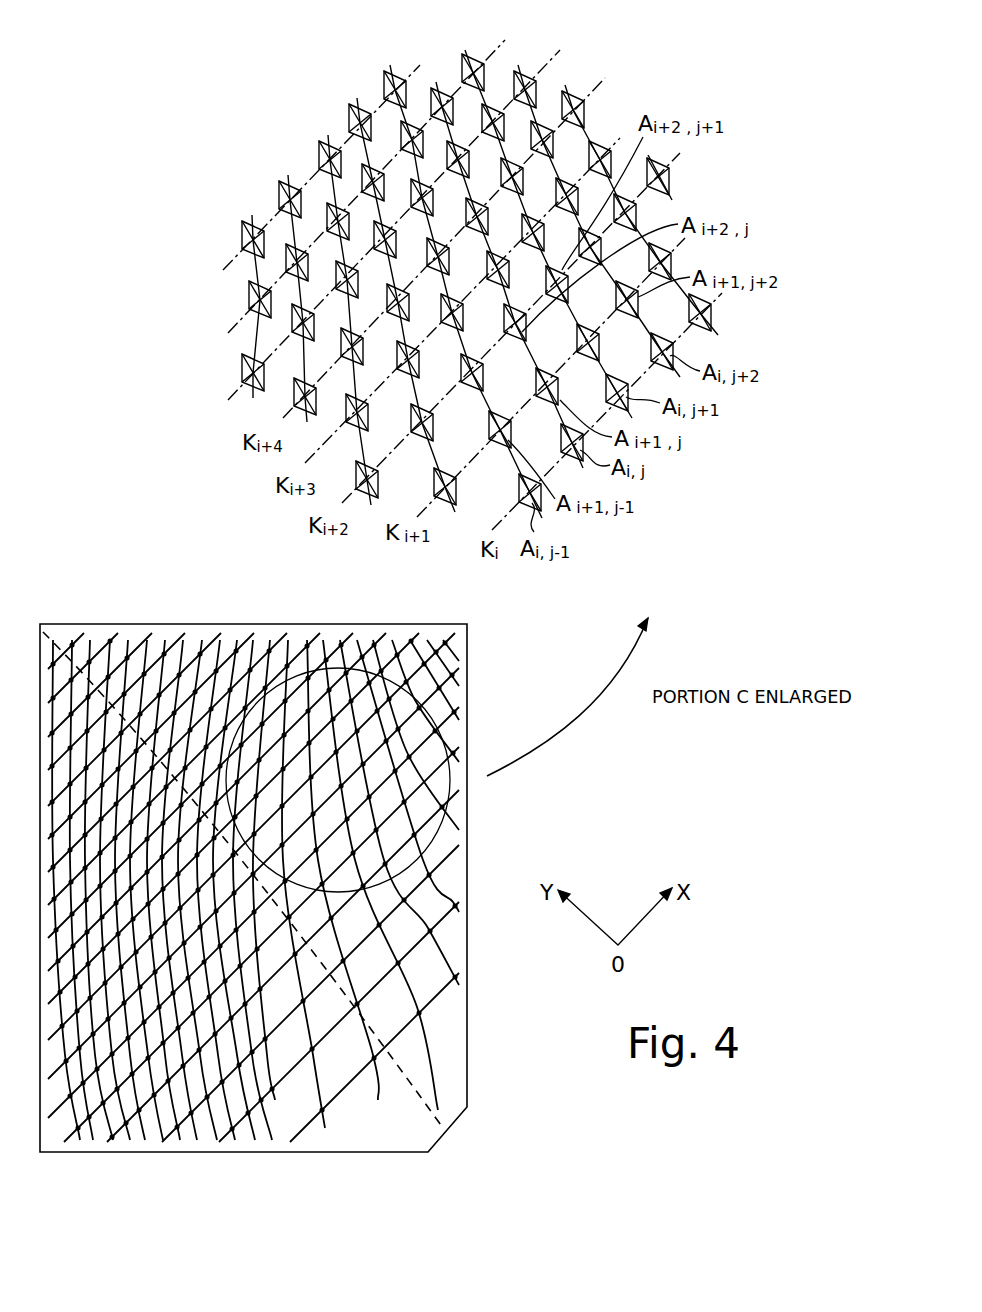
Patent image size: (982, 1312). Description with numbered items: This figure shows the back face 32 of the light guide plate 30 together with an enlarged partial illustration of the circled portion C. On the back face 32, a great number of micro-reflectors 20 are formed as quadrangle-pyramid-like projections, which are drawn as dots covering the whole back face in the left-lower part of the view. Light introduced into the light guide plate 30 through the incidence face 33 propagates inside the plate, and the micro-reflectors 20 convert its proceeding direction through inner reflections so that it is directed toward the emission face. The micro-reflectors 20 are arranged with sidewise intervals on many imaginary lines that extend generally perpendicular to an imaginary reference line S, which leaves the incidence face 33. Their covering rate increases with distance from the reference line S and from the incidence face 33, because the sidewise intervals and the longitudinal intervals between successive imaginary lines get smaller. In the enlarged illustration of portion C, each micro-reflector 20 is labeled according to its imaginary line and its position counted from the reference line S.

The micro-reflector 20 is at (300, 1132).
The light guide plate 30 is at (350, 1152).
The back face 32 is at (316, 650).
The incidence face 33 is at (470, 1158).
The circled portion C is at (453, 818).
The imaginary reference line S is at (405, 1052).